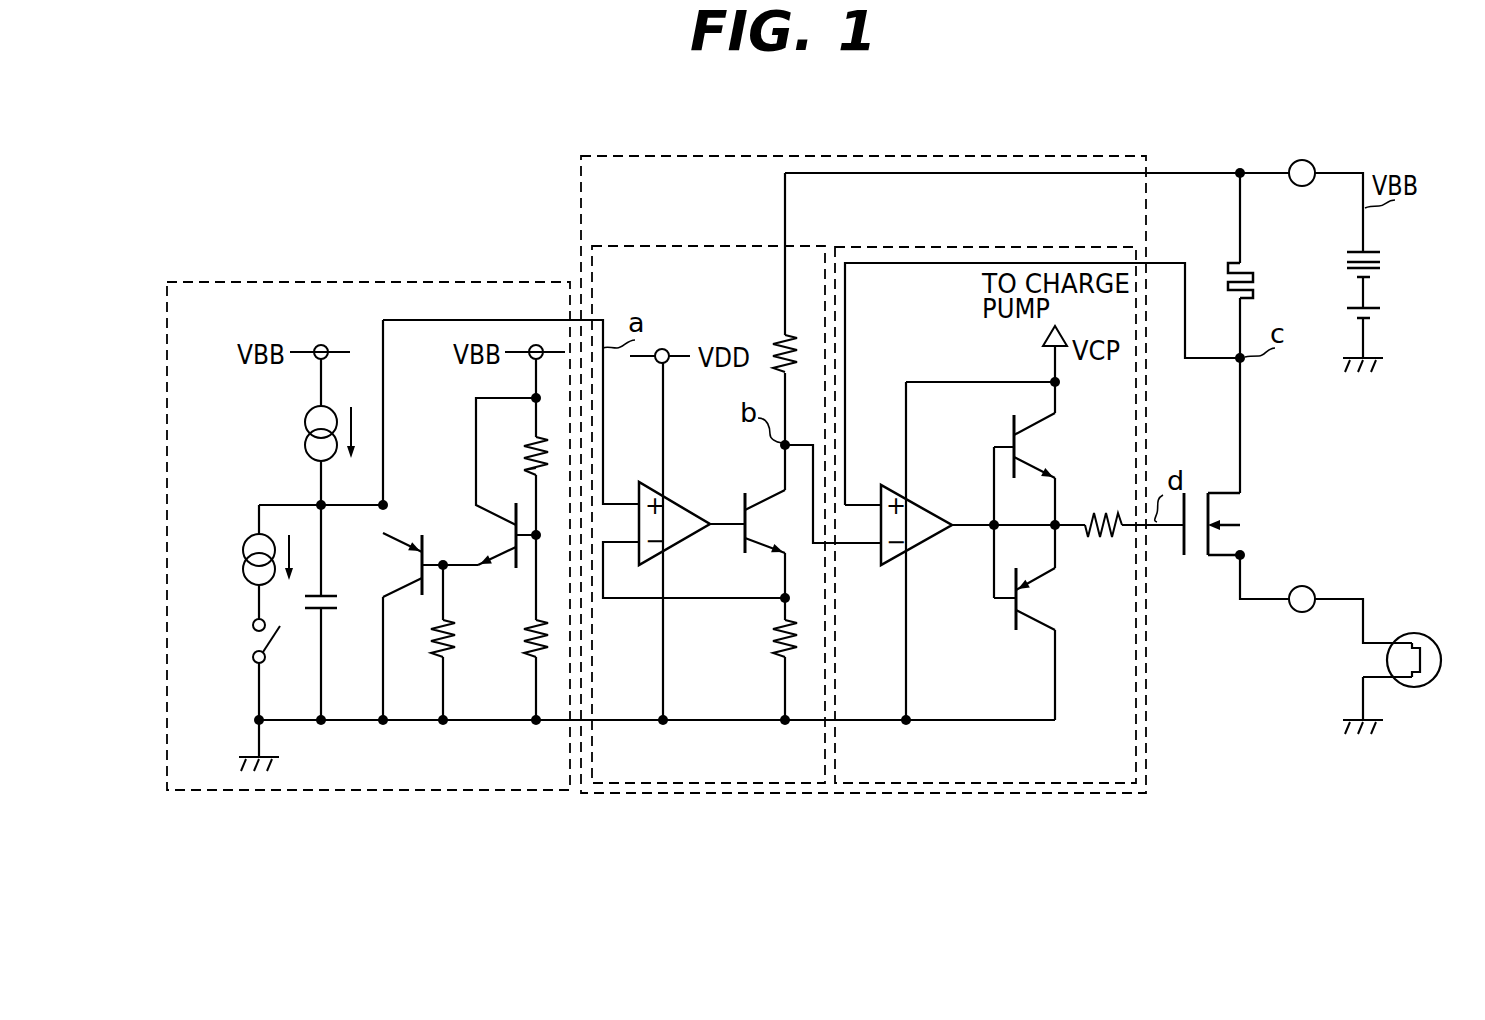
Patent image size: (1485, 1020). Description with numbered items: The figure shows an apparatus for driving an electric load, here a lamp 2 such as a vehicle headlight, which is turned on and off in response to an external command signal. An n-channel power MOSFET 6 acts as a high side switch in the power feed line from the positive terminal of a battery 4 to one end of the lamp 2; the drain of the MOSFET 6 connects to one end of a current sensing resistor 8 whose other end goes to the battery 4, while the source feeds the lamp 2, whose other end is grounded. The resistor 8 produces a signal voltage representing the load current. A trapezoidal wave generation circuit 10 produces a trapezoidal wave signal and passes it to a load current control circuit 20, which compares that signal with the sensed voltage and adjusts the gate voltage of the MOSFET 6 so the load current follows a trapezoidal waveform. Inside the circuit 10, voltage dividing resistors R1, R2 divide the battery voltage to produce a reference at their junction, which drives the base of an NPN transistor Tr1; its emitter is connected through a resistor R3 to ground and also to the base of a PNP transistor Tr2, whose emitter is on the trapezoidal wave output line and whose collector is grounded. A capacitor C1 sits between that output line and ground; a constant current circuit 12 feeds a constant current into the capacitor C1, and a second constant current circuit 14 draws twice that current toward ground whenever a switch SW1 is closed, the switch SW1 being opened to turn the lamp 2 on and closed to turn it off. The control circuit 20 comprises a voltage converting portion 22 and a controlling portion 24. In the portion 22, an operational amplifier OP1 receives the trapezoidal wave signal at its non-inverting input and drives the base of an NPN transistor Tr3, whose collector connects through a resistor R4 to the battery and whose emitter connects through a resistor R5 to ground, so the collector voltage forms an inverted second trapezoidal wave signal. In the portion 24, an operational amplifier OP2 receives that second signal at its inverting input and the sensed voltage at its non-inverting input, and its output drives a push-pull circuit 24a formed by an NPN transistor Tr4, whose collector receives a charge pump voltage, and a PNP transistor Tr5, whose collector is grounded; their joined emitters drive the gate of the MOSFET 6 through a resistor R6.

The lamp 2 is at (1420, 640).
The battery 4 is at (1380, 288).
The n-channel power MOSFET 6 is at (1250, 522).
The current sensing resistor 8 is at (1258, 283).
The trapezoidal wave generation circuit 10 is at (368, 282).
The constant current circuit 12 is at (306, 426).
The constant current circuit 14 is at (245, 555).
The load current control circuit 20 is at (858, 157).
The voltage converting portion 22 is at (680, 246).
The controlling portion 24 is at (973, 247).
The push-pull circuit 24a is at (1000, 632).
The switch SW1 is at (276, 655).
The capacitor C1 is at (342, 603).
The voltage dividing resistor R1 is at (529, 482).
The voltage dividing resistor R2 is at (520, 648).
The resistor R3 is at (427, 642).
The resistor R4 is at (771, 357).
The resistor R5 is at (768, 650).
The resistor R6 is at (1097, 507).
The NPN transistor Tr1 is at (492, 530).
The PNP transistor Tr2 is at (400, 555).
The NPN transistor Tr3 is at (742, 543).
The NPN transistor Tr4 is at (1037, 442).
The PNP transistor Tr5 is at (1035, 595).
The operational amplifier OP1 is at (680, 503).
The operational amplifier OP2 is at (920, 507).